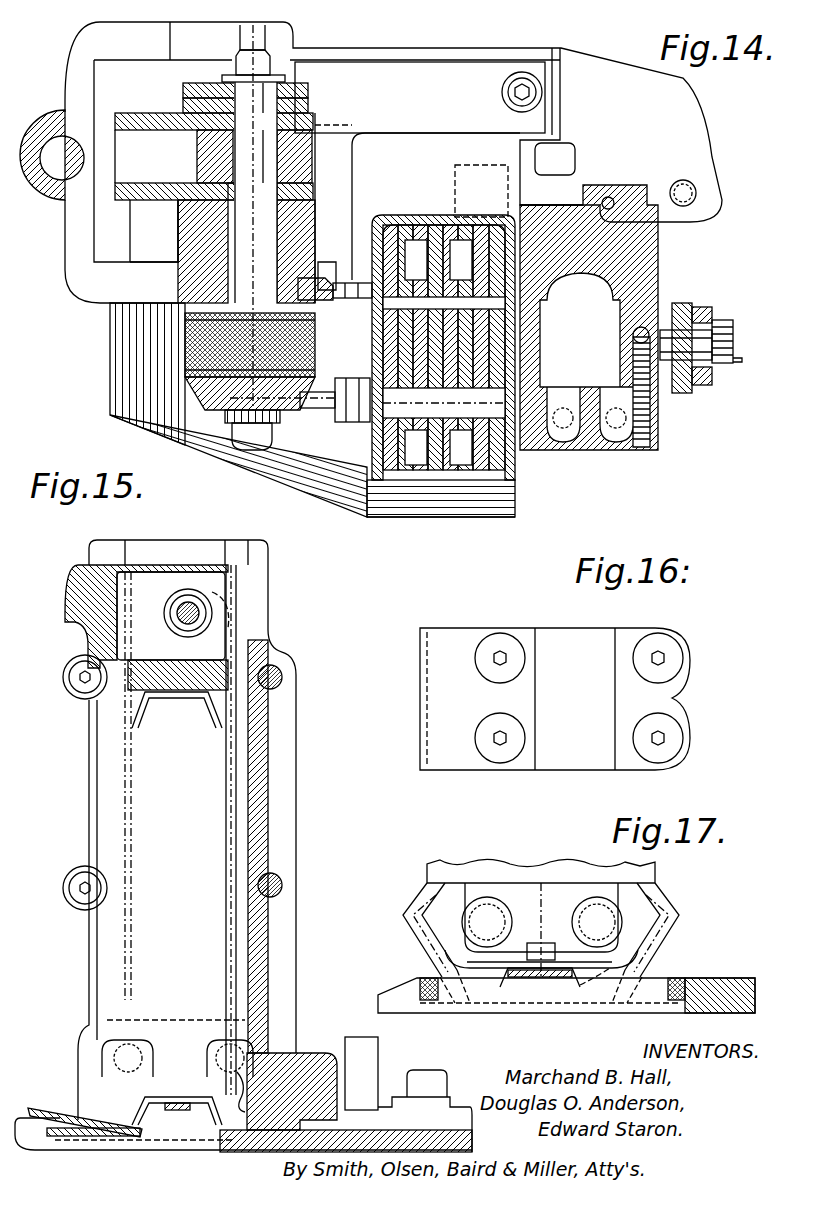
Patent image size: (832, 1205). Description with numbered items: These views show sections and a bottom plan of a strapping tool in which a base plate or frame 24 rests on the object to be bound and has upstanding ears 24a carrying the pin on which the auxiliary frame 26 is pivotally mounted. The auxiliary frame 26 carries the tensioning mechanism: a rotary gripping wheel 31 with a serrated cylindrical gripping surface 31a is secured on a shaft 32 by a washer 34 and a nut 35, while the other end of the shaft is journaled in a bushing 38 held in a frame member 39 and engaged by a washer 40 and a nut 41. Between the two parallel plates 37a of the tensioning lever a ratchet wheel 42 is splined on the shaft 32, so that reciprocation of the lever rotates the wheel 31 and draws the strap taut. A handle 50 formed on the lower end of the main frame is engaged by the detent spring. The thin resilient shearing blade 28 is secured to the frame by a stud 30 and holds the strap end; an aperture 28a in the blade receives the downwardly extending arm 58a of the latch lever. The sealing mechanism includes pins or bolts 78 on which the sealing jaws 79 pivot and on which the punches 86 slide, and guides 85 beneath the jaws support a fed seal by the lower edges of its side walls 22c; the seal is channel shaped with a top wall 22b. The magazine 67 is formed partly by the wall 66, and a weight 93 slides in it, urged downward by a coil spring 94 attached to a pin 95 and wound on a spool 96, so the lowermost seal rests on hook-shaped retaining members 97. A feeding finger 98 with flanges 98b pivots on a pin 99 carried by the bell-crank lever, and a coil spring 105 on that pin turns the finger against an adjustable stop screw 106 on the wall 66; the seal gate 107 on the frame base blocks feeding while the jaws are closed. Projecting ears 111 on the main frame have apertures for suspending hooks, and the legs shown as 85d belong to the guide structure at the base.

In FIG. 14, the upstanding ears 24a is at (170, 52).
In FIG. 14, the nut 41 is at (266, 62).
In FIG. 14, the washer 40 is at (285, 78).
In FIG. 14, the frame member 39 is at (183, 88).
In FIG. 14, the bushing 38 is at (183, 105).
In FIG. 14, the stud 30 is at (526, 95).
In FIG. 14, the parallel plates 37a is at (133, 131).
In FIG. 14, the ratchet wheel 42 is at (197, 158).
In FIG. 14, the handle 50 is at (45, 195).
In FIG. 14, the auxiliary frame 26 is at (178, 233).
In FIG. 14, the guides 85 is at (417, 216).
In FIG. 17, the guides 85 is at (412, 935).
In FIG. 14, the aperture 28a is at (322, 272).
In FIG. 14, the shaft 32 is at (180, 270).
In FIG. 14, the serrated cylindrical gripping surface 31a is at (185, 341).
In FIG. 14, the downwardly extending arm 58a is at (325, 305).
In FIG. 14, the pins or bolts 78 is at (518, 392).
In FIG. 17, the pins or bolts 78 is at (585, 922).
In FIG. 14, the wall 66 is at (660, 278).
In FIG. 14, the pin 99 is at (688, 303).
In FIG. 14, the flanges 98b is at (712, 318).
In FIG. 14, the feeding finger 98 is at (723, 347).
In FIG. 15, the feeding finger 98 is at (182, 1112).
In FIG. 14, the adjustable stop screw 106 is at (630, 347).
In FIG. 14, the coil spring 105 is at (742, 360).
In FIG. 14, the rotary gripping wheel 31 is at (185, 383).
In FIG. 14, the shearing blade 28 is at (328, 380).
In FIG. 14, the washer 34 is at (235, 420).
In FIG. 14, the nut 35 is at (250, 441).
In FIG. 14, the punches 86 is at (443, 484).
In FIG. 14, the sealing jaws 79 is at (405, 505).
In FIG. 15, the magazine 67 is at (168, 537).
In FIG. 15, the spool 96 is at (190, 600).
In FIG. 15, the coil spring 94 is at (218, 618).
In FIG. 15, the weight 93 is at (147, 671).
In FIG. 15, the side walls 22c is at (143, 733).
In FIG. 17, the side walls 22c is at (608, 968).
In FIG. 15, the top wall 22b is at (181, 708).
In FIG. 15, the hook-shaped retaining members 97 is at (108, 1138).
In FIG. 16, the hook-shaped retaining members 97 is at (420, 693).
In FIG. 15, the pin 95 is at (298, 1075).
In FIG. 15, the projecting ears 111 is at (363, 1061).
In FIG. 17, the clip leg 85d is at (505, 1003).
In FIG. 17, the seal gate 107 is at (548, 985).
In FIG. 17, the base plate or frame 24 is at (733, 985).